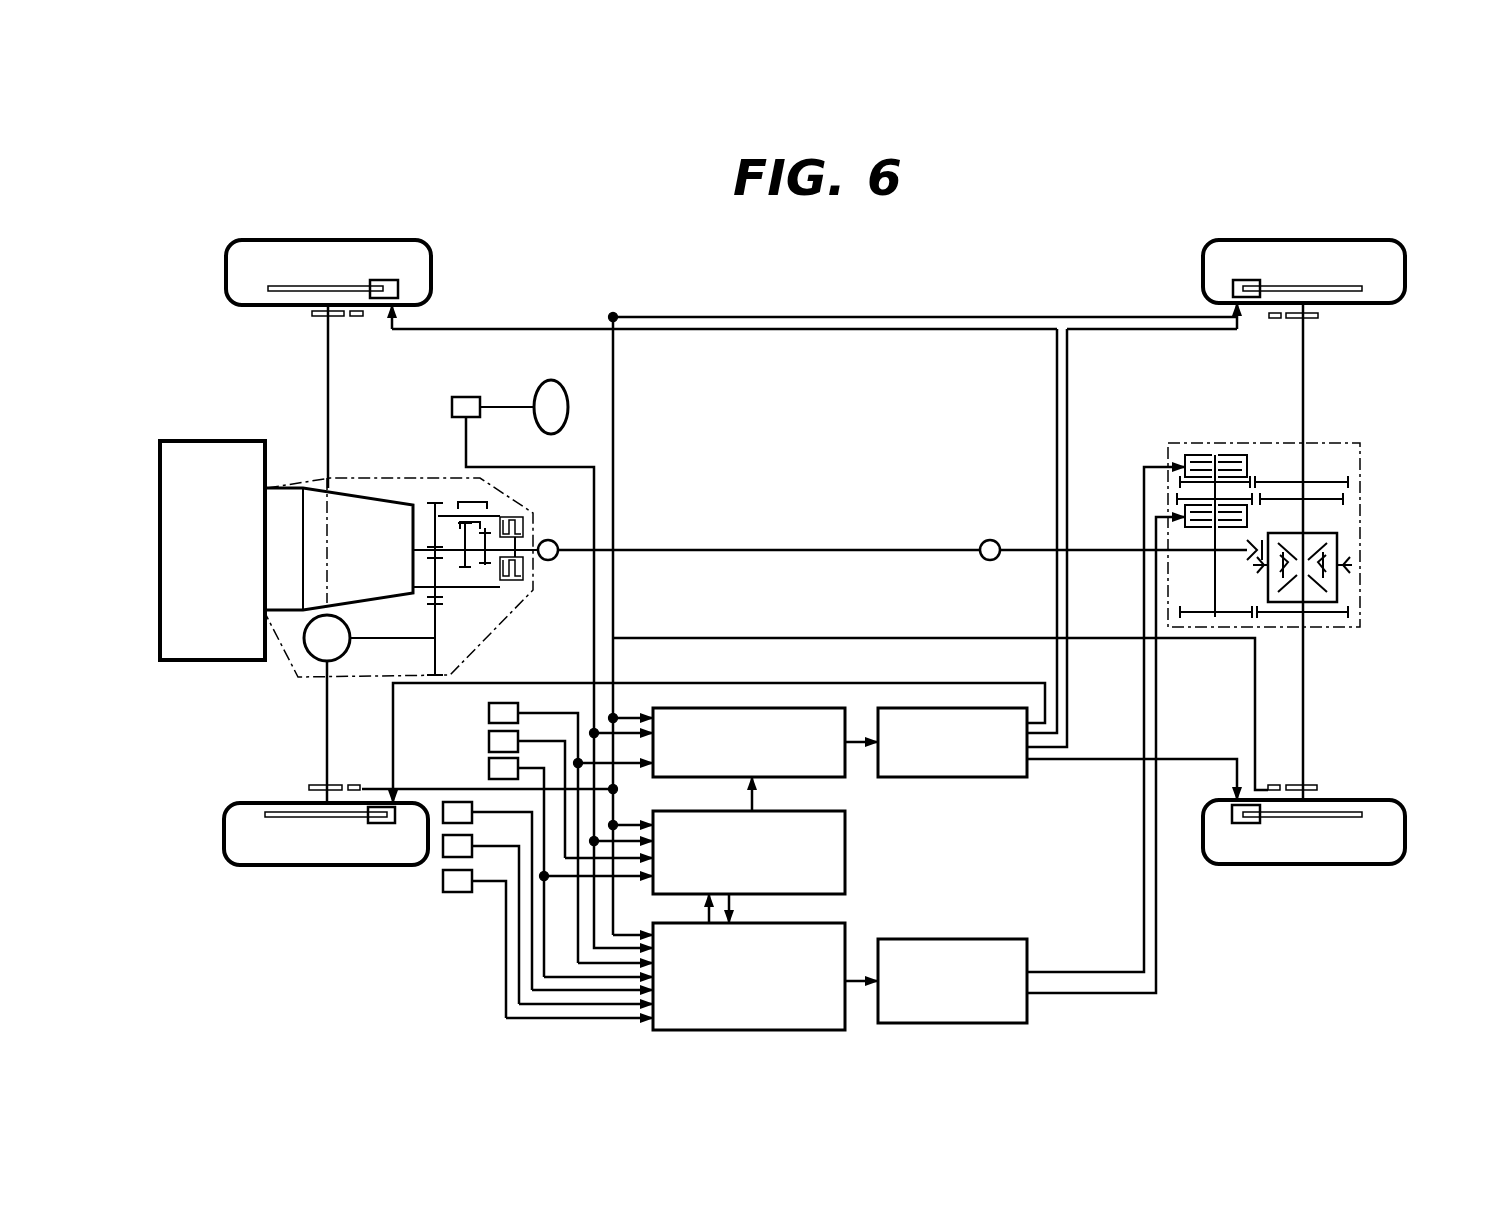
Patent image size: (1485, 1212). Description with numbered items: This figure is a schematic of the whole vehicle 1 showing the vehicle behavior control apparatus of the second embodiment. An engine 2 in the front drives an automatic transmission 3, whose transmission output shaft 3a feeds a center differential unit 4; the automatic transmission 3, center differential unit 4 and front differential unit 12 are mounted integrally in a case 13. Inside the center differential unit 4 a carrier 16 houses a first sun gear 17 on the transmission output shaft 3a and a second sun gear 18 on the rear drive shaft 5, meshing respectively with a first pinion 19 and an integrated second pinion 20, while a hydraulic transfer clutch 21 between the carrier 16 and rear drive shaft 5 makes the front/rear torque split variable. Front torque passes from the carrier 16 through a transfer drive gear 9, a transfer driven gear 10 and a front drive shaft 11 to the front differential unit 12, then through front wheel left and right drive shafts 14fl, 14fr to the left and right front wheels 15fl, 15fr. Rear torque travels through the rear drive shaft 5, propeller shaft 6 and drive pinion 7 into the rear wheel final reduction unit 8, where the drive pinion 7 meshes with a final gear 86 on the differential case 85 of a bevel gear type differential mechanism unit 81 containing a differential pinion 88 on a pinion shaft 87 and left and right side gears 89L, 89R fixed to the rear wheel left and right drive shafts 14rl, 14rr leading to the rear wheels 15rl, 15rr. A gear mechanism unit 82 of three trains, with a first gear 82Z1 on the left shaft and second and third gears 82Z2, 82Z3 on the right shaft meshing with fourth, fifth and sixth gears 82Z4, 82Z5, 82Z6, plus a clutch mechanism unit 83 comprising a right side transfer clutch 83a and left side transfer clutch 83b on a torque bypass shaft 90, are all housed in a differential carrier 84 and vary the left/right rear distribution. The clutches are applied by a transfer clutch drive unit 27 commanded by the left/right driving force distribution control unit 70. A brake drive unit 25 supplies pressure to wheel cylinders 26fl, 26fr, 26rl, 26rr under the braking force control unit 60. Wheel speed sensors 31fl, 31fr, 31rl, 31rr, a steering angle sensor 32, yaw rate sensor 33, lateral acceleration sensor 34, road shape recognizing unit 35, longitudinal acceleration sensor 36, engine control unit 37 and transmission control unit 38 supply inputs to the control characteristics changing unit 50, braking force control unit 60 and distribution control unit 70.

The vehicle 1 is at (973, 255).
The engine 2 is at (220, 441).
The automatic transmission 3 is at (318, 490).
The transmission output shaft 3a is at (428, 548).
The center differential unit 4 is at (423, 490).
The rear drive shaft 5 is at (548, 541).
The propeller shaft 6 is at (797, 548).
The drive pinion 7 is at (1000, 562).
The rear wheel final reduction unit 8 is at (1215, 412).
The transfer drive gear 9 is at (435, 503).
The transfer driven gear 10 is at (430, 607).
The front drive shaft 11 is at (377, 637).
The front differential unit 12 is at (322, 662).
The case 13 is at (290, 670).
The front wheel right drive shaft 14fr is at (328, 362).
The front wheel left drive shaft 14fl is at (326, 760).
The rear wheel right drive shaft 14rr is at (1303, 338).
The rear wheel left drive shaft 14rl is at (1303, 707).
The right front wheel 15fr is at (258, 240).
The left front wheel 15fl is at (258, 865).
The right rear wheel 15rr is at (1368, 240).
The left rear wheel 15rl is at (1360, 864).
The carrier 16 is at (466, 585).
The first sun gear 17 is at (468, 567).
The second sun gear 18 is at (503, 575).
The first pinion 19 is at (460, 502).
The second pinion 20 is at (485, 505).
The transfer clutch 21 is at (533, 486).
The brake drive unit 25 is at (970, 777).
The right front-wheel wheel cylinder 26fr is at (383, 280).
The left front-wheel wheel cylinder 26fl is at (385, 823).
The right rear-wheel wheel cylinder 26rr is at (1245, 280).
The left rear-wheel wheel cylinder 26rl is at (1245, 823).
The transfer clutch drive unit 27 is at (960, 939).
The wheel speed sensor 31fr is at (357, 320).
The wheel speed sensor 31fl is at (353, 785).
The wheel speed sensor 31rr is at (1274, 320).
The wheel speed sensor 31rl is at (1275, 788).
The steering angle sensor 32 is at (470, 397).
The yaw rate sensor 33 is at (487, 712).
The lateral acceleration sensor 34 is at (487, 769).
The road shape recognizing unit 35 is at (487, 741).
The longitudinal acceleration sensor 36 is at (472, 814).
The engine control unit 37 is at (472, 848).
The transmission control unit 38 is at (455, 892).
The control characteristics changing unit 50 is at (845, 852).
The braking force control unit 60 is at (812, 708).
The left/right driving force distribution control unit 70 is at (845, 937).
The bevel gear type differential mechanism unit 81 is at (1352, 592).
The gear mechanism unit 82 is at (1323, 463).
The first gear 82Z1 is at (1348, 612).
The second gear 82Z2 is at (1343, 499).
The third gear 82Z3 is at (1348, 482).
The fourth gear 82Z4 is at (1180, 612).
The fifth gear 82Z5 is at (1175, 499).
The sixth gear 82Z6 is at (1180, 479).
The clutch mechanism unit 83 is at (1000, 438).
The right side transfer clutch 83a is at (1160, 445).
The left side transfer clutch 83b is at (1168, 533).
The differential carrier 84 is at (1258, 443).
The differential case 85 is at (1330, 560).
The final gear 86 is at (1350, 575).
The pinion shaft 87 is at (1297, 585).
The differential pinion 88 is at (1268, 583).
The right side gear 89R is at (1320, 545).
The left side gear 89L is at (1320, 590).
The torque bypass shaft 90 is at (1213, 573).